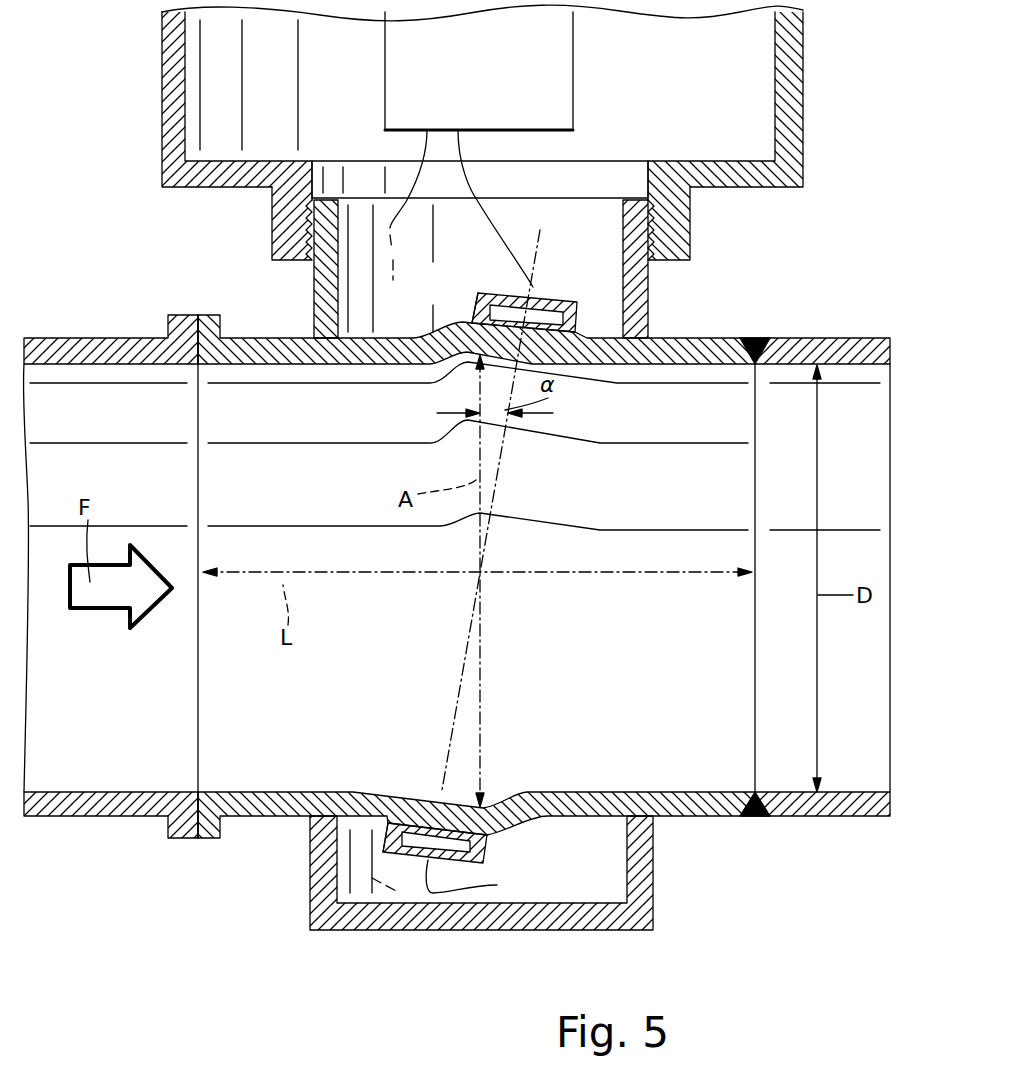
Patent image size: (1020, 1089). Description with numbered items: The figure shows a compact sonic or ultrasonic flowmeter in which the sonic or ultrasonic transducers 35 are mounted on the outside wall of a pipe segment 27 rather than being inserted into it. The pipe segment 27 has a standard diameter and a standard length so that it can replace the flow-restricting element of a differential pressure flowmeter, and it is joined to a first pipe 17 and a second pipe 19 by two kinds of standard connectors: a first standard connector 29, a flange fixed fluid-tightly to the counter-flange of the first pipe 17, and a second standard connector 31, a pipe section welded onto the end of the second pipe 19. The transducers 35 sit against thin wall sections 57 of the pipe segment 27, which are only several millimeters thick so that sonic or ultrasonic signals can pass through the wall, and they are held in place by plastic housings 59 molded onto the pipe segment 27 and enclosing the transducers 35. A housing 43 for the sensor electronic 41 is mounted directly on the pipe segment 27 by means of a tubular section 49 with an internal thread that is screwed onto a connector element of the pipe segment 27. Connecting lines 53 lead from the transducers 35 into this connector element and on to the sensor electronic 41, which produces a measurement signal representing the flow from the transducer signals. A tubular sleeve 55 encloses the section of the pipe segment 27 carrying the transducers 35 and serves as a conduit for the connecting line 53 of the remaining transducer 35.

The first pipe 17 is at (95, 800).
The second pipe 19 is at (831, 800).
The pipe segment 27 is at (248, 352).
The first standard connector 29 is at (213, 823).
The second standard connector 31 is at (755, 820).
The sonic- or ultrasonic transducers 35 is at (477, 308).
The sensor electronic 41 is at (486, 84).
The housing 43 is at (175, 90).
The tubular section 49 is at (290, 210).
The connecting lines 53 is at (407, 200).
The tubular sleeve 55 is at (362, 930).
The wall sections 57 is at (560, 332).
The plastic housings 59 is at (563, 300).